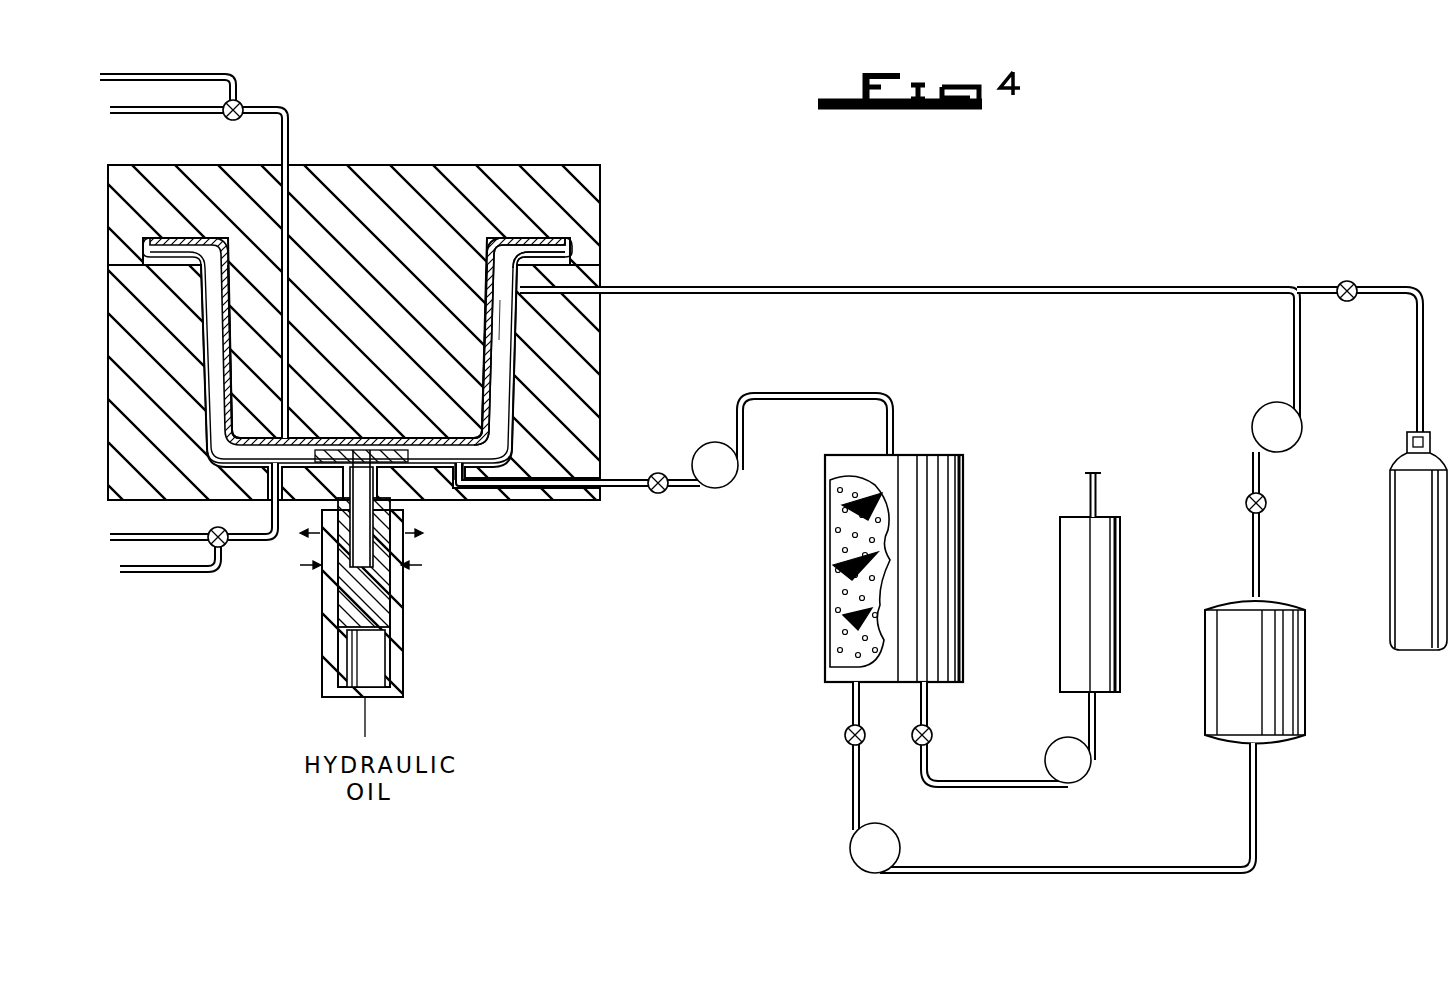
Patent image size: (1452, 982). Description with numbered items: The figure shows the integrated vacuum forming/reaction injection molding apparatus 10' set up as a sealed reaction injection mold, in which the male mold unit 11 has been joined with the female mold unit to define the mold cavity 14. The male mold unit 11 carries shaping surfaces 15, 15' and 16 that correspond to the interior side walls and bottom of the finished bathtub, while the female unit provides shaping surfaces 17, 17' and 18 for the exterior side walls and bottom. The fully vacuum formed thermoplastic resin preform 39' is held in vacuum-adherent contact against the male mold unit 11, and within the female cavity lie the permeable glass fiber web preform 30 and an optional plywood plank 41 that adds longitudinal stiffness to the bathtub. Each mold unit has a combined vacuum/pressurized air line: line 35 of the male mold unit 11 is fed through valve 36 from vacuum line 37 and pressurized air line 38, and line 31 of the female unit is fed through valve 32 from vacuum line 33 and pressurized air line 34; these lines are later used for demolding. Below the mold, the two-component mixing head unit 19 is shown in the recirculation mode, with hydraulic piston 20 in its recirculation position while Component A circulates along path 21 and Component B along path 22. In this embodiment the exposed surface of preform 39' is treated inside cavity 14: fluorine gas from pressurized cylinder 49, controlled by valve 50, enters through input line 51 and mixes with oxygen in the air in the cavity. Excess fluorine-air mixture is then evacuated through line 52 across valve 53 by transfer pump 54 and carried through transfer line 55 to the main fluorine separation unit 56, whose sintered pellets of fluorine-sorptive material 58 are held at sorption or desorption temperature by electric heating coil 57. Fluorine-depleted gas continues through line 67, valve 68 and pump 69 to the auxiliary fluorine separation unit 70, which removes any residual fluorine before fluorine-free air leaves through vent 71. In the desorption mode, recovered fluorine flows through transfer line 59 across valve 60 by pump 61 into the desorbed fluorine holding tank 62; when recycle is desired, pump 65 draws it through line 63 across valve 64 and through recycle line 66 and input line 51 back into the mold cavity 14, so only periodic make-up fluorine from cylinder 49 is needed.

The integrated vacuum forming/reaction injection molding apparatus 10' is at (354, 285).
The male mold unit 11 is at (425, 180).
The mold cavity 14 is at (548, 500).
The male mold unit shaping surface 15 is at (357, 294).
The male mold unit shaping surface 15' is at (602, 250).
The male mold unit shaping surface 16 is at (333, 420).
The female mold unit shaping surface 17 is at (357, 285).
The female mold unit shaping surface 17' is at (565, 341).
The female mold unit shaping surface 18 is at (447, 492).
The two-component mixing head unit 19 is at (322, 668).
The hydraulic piston 20 is at (330, 610).
The low pressure recirculation path for Component A 21 is at (320, 550).
The low pressure recirculation path for Component B 22 is at (407, 550).
The permeable mold insert 30 is at (483, 480).
The combined vacuum/pressurized air line for female mold unit 31 is at (258, 543).
The valve 32 is at (218, 526).
The vacuum line 33 is at (131, 513).
The pressurized air line 34 is at (172, 575).
The combined vacuum/pressurized air line for male mold unit 35 is at (296, 132).
The valve 36 is at (262, 97).
The vacuum line 37 is at (180, 116).
The pressurized air line 38 is at (200, 68).
The fully vacuum formed thermoplastic resin preform 39' is at (577, 320).
The plywood plank 41 is at (400, 445).
The pressurized source of fluorine gas 49 is at (1390, 472).
The valve 50 is at (1355, 280).
The fluorine gas input line 51 is at (745, 284).
The fluorine-air mixture evacuation line 52 is at (630, 497).
The valve 53 is at (680, 497).
The transfer pump 54 is at (727, 480).
The fluorine-air mixture transfer line 55 is at (765, 390).
The main fluorine separation unit 56 is at (958, 455).
The electric heating coil 57 is at (830, 528).
The fluorine-sorptive material 58 is at (833, 572).
The desorbed fluorine transfer line 59 is at (850, 700).
The valve 60 is at (850, 746).
The transfer pump 61 is at (862, 836).
The desorbed fluorine holding tank 62 is at (1272, 630).
The desorbed fluorine transfer line 63 is at (1250, 545).
The valve 64 is at (1244, 494).
The transfer pump 65 is at (1262, 407).
The desorbed fluorine recycle line 66 is at (1292, 332).
The residual fluorine-air mixture transfer line 67 is at (930, 702).
The valve 68 is at (936, 725).
The transfer pump 69 is at (1062, 745).
The auxiliary fluorine separation unit 70 is at (1060, 593).
The vent for fluorine-free air 71 is at (1090, 478).